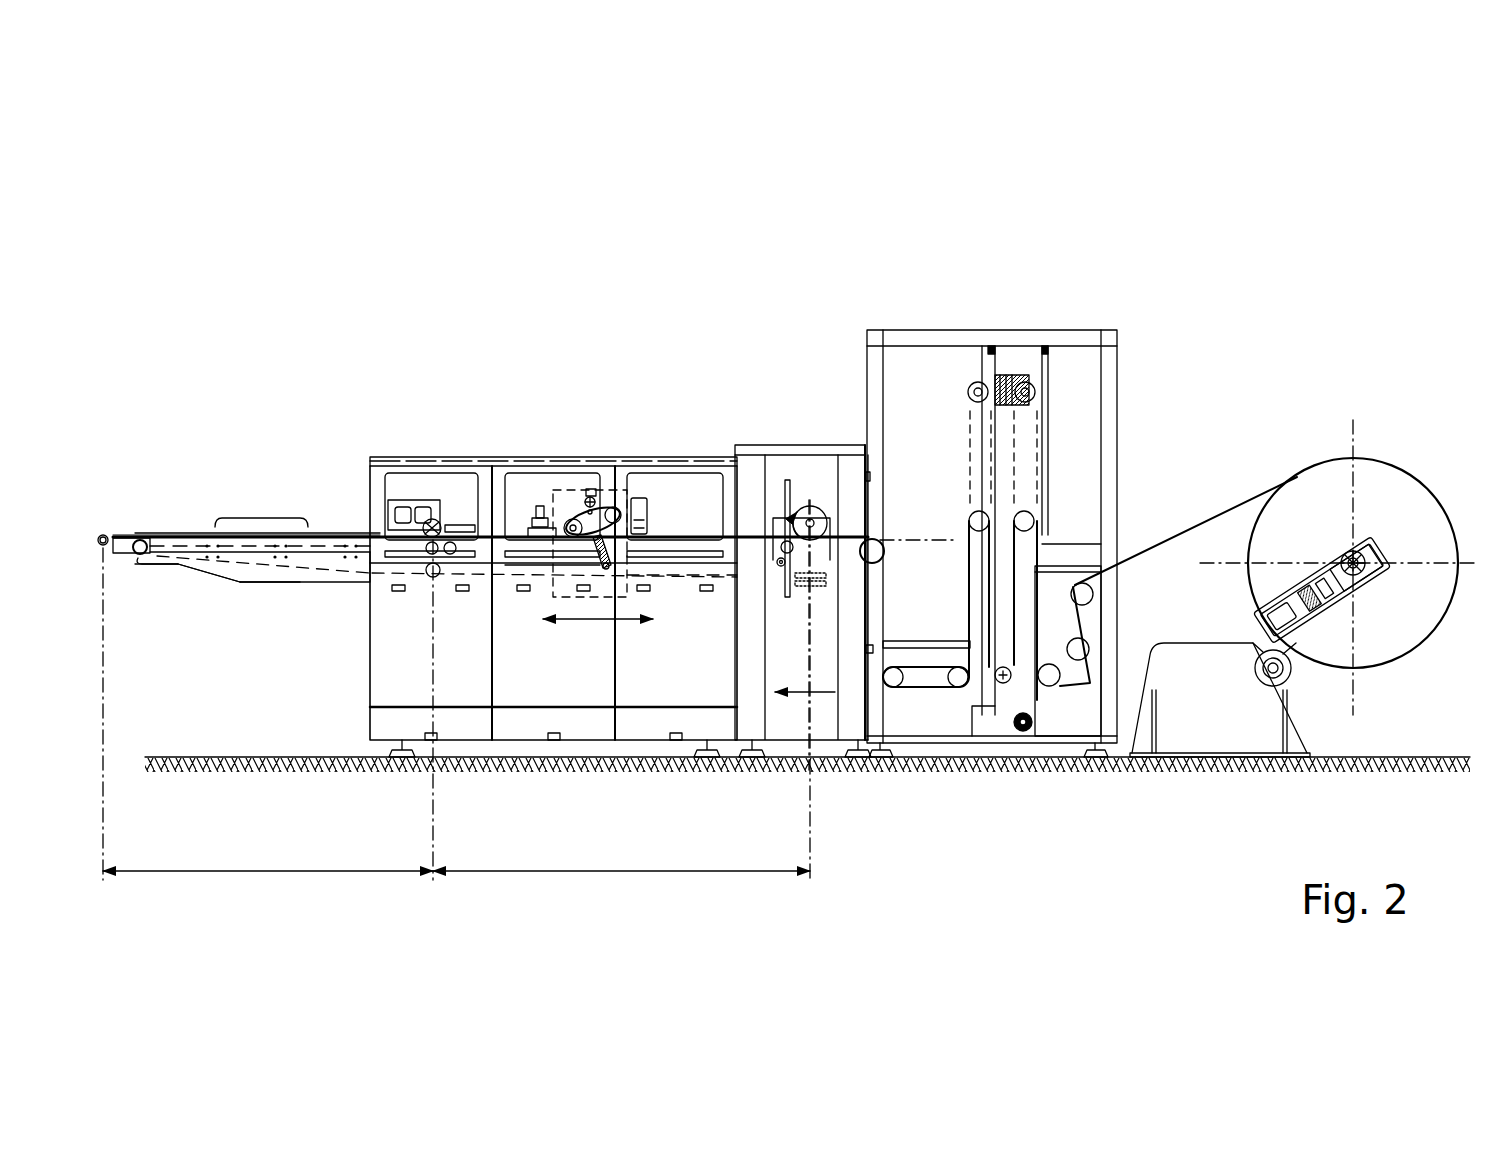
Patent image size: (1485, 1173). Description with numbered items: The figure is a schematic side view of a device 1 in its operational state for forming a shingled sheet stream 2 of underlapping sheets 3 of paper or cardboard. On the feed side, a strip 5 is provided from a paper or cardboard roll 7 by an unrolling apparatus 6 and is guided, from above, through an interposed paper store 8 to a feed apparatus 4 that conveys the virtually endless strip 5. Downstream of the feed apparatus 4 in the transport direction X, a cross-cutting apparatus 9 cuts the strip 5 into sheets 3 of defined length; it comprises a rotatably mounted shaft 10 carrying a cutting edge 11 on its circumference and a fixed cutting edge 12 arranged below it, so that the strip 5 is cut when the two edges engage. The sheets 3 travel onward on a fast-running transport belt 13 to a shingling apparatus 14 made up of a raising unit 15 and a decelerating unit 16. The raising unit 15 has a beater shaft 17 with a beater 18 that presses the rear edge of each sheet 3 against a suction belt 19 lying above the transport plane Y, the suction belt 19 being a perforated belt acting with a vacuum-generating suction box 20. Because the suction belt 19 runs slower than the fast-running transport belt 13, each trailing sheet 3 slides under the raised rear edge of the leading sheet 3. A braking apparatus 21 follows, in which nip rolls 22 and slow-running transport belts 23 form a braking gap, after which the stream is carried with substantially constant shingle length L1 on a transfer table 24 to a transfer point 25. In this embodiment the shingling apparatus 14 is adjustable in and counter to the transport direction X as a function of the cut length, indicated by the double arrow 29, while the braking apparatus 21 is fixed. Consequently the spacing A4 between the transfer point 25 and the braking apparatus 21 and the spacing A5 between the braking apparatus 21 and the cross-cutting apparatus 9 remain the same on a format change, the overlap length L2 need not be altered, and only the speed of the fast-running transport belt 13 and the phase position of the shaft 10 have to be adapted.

The device 1 is at (282, 248).
The sheet stream 2 is at (230, 458).
The sheets 3 is at (175, 532).
The feed apparatus 4 is at (888, 556).
The strip 5 is at (850, 490).
The unrolling apparatus 6 is at (1340, 650).
The paper or cardboard roll 7 is at (1395, 487).
The paper store 8 is at (1005, 320).
The cross-cutting apparatus 9 is at (795, 478).
The shaft 10 is at (808, 545).
The cutting edge 11 is at (792, 562).
The fixed cutting edge 12 is at (820, 568).
The fast-running transport belt 13 is at (680, 578).
The shingling apparatus 14 is at (563, 468).
The raising unit 15 is at (553, 565).
The decelerating unit 16 is at (608, 505).
The beater shaft 17 is at (640, 578).
The beater 18 is at (543, 568).
The suction belt 19 is at (578, 492).
The suction box 20 is at (632, 517).
The braking apparatus 21 is at (413, 478).
The nip rolls 22 is at (440, 524).
The slow-running transport belts 23 is at (285, 566).
The transfer table 24 is at (228, 568).
The transfer point 25 is at (105, 534).
The double arrow 29 is at (586, 600).
The shingle length L1 is at (178, 568).
The overlap length L2 is at (262, 517).
The spacing A4 is at (272, 873).
The spacing A5 is at (620, 873).
The transport direction X is at (783, 700).
The transport plane Y is at (933, 532).